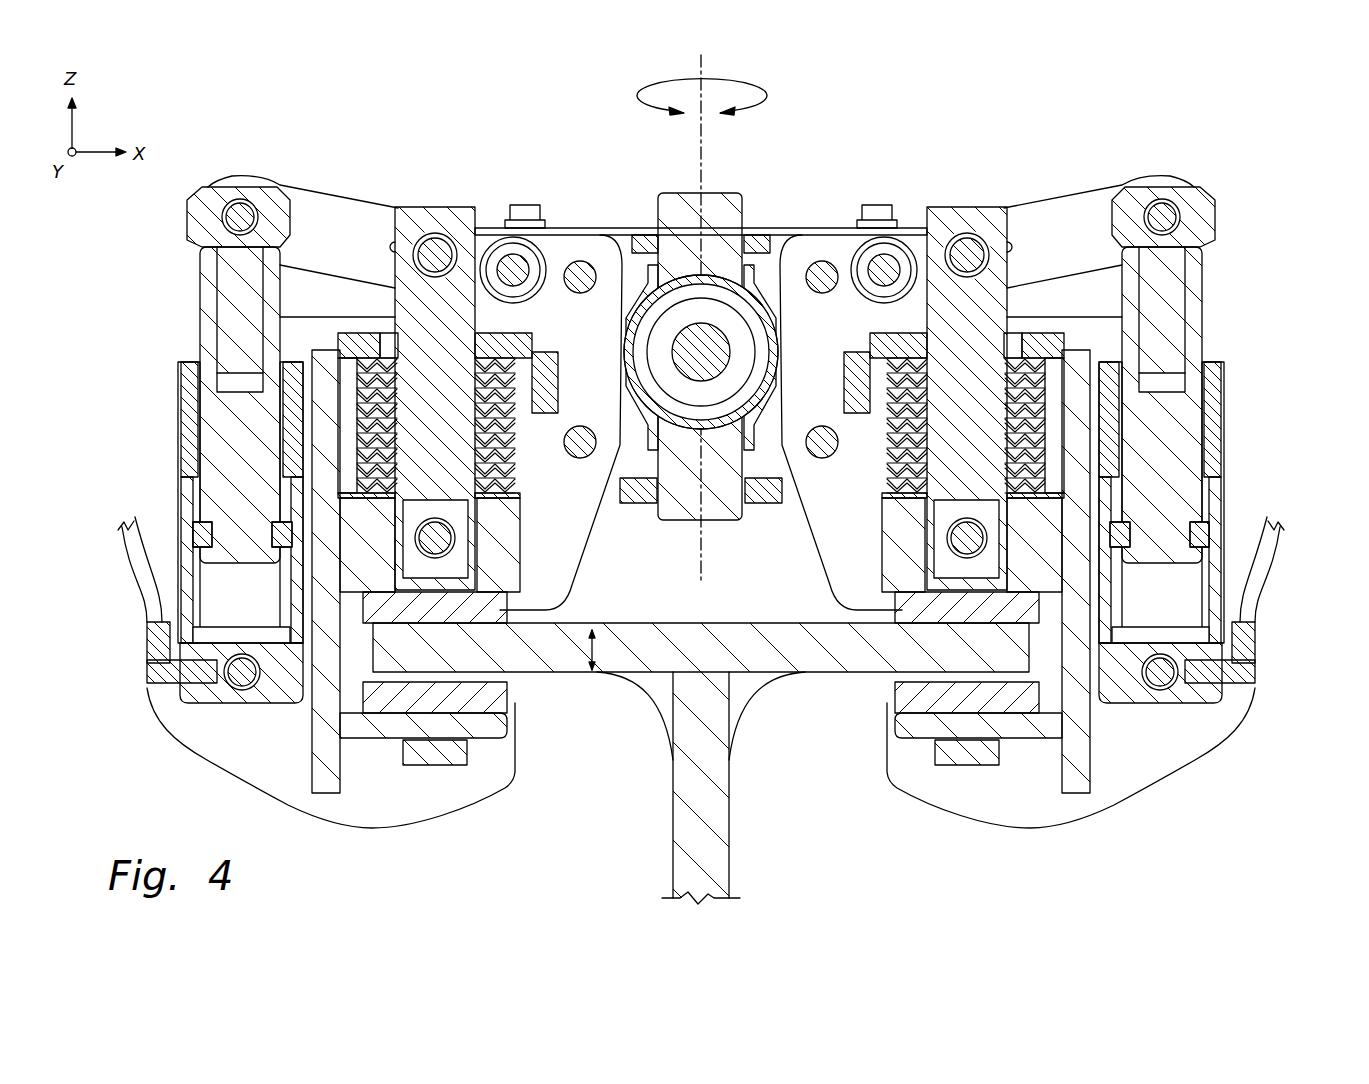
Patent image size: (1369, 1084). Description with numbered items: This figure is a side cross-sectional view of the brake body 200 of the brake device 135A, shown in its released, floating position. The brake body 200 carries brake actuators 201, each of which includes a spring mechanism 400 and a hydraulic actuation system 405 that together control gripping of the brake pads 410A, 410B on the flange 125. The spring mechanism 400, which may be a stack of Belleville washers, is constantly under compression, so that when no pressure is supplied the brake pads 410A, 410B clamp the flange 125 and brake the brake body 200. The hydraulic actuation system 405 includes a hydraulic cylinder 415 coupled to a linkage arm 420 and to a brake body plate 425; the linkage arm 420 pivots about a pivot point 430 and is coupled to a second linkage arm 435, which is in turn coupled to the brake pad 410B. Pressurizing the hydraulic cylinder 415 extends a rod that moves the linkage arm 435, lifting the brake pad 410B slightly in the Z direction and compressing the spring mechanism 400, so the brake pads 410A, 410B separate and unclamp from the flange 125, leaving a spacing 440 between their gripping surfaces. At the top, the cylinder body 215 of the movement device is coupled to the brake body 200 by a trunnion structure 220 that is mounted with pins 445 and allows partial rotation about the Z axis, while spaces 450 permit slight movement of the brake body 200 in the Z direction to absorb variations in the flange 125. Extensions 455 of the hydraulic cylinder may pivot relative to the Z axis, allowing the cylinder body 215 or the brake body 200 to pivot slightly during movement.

The flange 125 is at (718, 628).
The brake device 135A is at (606, 167).
The brake body 200 is at (1097, 142).
The brake actuator 201 is at (136, 412).
The cylinder body 215 is at (655, 372).
The trunnion structure 220 is at (762, 228).
The spring mechanism 400 is at (1100, 343).
The hydraulic actuation system 405 is at (175, 294).
The brake pad 410A is at (500, 690).
The brake pad 410B is at (500, 603).
The hydraulic cylinder 415 is at (180, 480).
The linkage arm 420 is at (357, 203).
The brake body plate 425 is at (243, 762).
The pivot point 430 is at (882, 262).
The linkage arm 435 is at (395, 306).
The spacing 440 is at (596, 650).
The pins 445 is at (578, 294).
The spaces 450 is at (775, 278).
The extensions 455 is at (672, 192).